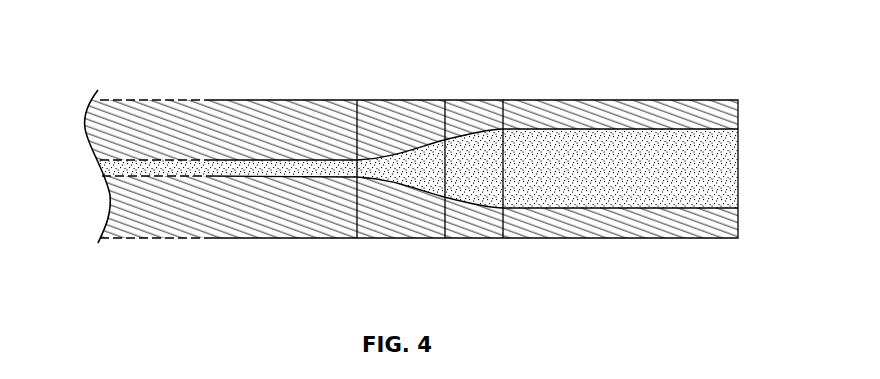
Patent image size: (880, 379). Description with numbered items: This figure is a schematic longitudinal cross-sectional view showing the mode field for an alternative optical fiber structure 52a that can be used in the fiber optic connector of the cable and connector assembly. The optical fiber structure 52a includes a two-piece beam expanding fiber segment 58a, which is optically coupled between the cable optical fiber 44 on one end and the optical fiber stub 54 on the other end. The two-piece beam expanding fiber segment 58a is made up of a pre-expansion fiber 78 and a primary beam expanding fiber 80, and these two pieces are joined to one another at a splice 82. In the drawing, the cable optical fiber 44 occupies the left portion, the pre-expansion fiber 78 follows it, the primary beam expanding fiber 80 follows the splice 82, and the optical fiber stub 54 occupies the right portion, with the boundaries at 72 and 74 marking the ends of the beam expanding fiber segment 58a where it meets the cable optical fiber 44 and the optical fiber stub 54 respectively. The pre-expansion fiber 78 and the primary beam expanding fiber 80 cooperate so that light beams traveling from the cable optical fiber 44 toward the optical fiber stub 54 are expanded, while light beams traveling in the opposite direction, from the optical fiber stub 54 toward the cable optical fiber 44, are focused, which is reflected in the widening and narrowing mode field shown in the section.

The cable optical fiber 44 is at (135, 237).
The optical fiber structure 52a is at (242, 237).
The optical fiber stub 54 is at (643, 237).
The two-piece beam expanding fiber segment 58a is at (405, 237).
The proximal transition boundary 72 is at (357, 99).
The distal transition boundary 74 is at (503, 99).
The pre-expansion fiber 78 is at (387, 239).
The primary beam expanding fiber 80 is at (485, 239).
The splice 82 is at (445, 99).